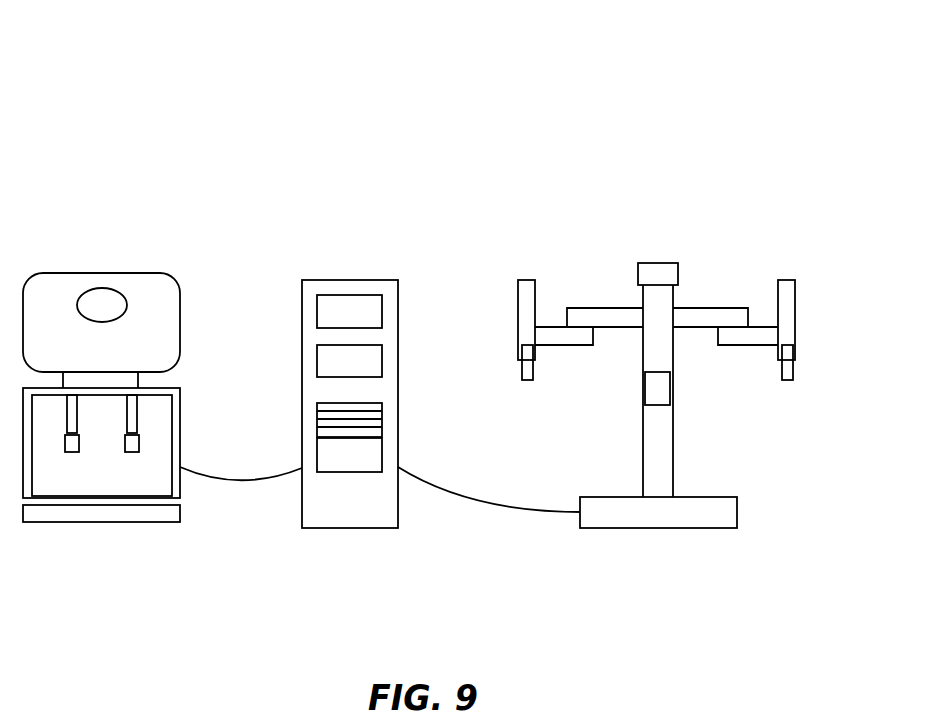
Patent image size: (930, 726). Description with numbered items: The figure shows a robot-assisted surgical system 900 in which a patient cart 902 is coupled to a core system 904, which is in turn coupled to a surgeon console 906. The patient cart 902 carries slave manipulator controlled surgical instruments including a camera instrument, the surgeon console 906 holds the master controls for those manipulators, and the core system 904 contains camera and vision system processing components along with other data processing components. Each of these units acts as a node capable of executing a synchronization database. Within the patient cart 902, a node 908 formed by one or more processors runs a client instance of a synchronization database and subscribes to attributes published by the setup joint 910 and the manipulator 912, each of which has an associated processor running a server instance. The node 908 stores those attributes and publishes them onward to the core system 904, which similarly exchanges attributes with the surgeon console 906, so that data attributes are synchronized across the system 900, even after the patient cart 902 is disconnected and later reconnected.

The robot-assisted surgical system 900 is at (60, 50).
The patient cart 902 is at (656, 383).
The core system 904 is at (398, 333).
The surgeon console 906 is at (180, 317).
The node 908 is at (643, 393).
The setup joint 910 is at (729, 345).
The manipulator 912 is at (787, 280).